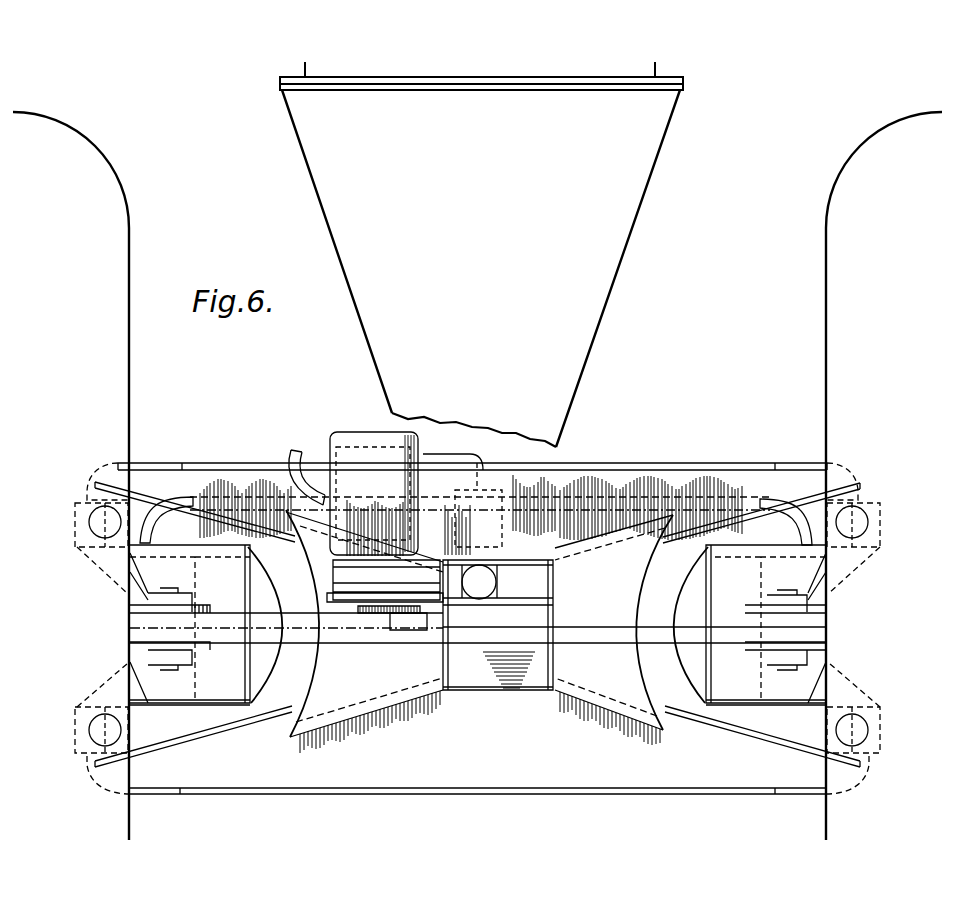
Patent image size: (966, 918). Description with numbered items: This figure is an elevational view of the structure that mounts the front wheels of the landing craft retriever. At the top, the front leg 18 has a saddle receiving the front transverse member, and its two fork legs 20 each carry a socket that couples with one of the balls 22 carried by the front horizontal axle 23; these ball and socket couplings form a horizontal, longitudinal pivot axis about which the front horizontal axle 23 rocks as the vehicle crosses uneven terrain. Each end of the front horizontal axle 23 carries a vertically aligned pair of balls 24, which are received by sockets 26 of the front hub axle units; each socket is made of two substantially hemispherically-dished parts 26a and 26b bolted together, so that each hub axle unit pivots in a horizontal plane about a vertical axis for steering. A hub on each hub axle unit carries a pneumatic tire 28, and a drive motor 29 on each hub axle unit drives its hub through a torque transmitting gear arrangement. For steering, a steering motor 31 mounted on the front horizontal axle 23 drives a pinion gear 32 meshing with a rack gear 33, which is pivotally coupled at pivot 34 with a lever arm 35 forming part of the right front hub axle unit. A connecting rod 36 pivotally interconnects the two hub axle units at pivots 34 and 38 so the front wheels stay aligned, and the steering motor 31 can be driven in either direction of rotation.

The front leg 18 is at (620, 277).
The fork legs 20 is at (380, 343).
The balls 22 is at (486, 582).
The front horizontal axle 23 is at (692, 482).
The balls 24 is at (92, 514).
The sockets 26 is at (76, 528).
The hemispherically-dished part 26a is at (870, 515).
The hemispherically-dished part 26b is at (840, 555).
The pneumatic tire 28 is at (129, 428).
The drive motor 29 is at (205, 690).
The steering motor 31 is at (354, 478).
The pinion gear 32 is at (355, 613).
The rack gear 33 is at (305, 630).
The pivot 34 is at (174, 668).
The lever arm 35 is at (135, 638).
The connecting rod 36 is at (604, 632).
The pivot 38 is at (776, 591).